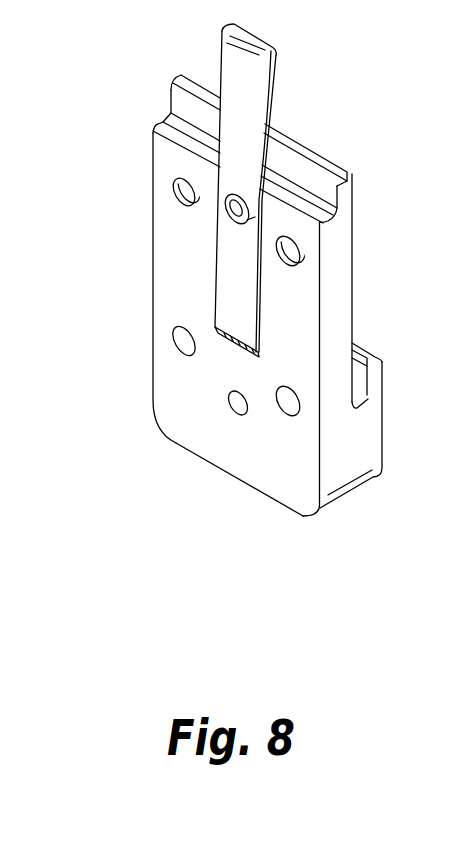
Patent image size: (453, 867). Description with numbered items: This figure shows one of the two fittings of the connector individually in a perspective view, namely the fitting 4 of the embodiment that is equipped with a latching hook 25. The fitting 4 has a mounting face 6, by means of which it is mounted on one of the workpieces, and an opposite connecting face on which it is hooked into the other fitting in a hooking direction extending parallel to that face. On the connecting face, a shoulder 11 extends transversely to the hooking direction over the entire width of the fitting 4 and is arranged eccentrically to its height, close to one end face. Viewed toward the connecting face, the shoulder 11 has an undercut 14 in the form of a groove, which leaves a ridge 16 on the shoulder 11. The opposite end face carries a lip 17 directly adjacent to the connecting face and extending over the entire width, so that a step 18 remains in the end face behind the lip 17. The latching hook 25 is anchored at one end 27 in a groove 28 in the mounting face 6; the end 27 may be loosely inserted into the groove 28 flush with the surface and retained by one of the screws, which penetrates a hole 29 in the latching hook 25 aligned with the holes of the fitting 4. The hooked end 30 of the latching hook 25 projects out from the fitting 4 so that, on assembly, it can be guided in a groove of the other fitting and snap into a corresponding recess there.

The latching hook 25 is at (270, 280).
The hooked end 30 is at (186, 224).
The end 27 is at (240, 263).
The groove 28 is at (232, 339).
The hole 29 is at (232, 211).
The lip 17 is at (346, 183).
The step 18 is at (340, 222).
The ridge 16 is at (377, 368).
The undercut 14 is at (360, 400).
The shoulder 11 is at (362, 447).
The fitting 4 is at (224, 335).
The mounting face 6 is at (286, 484).